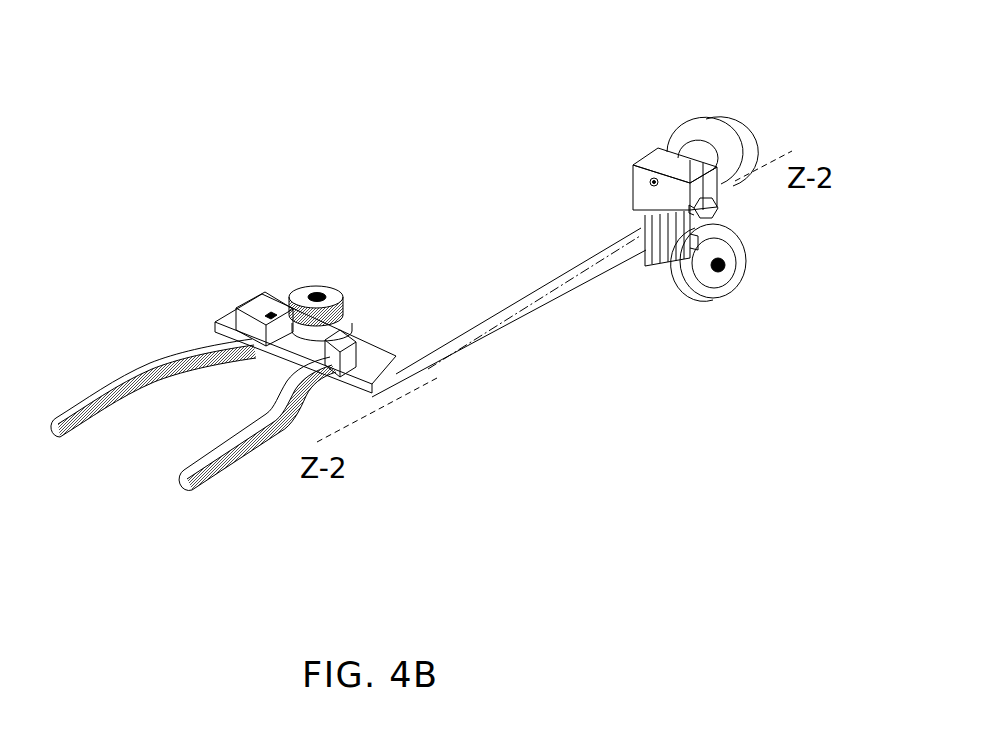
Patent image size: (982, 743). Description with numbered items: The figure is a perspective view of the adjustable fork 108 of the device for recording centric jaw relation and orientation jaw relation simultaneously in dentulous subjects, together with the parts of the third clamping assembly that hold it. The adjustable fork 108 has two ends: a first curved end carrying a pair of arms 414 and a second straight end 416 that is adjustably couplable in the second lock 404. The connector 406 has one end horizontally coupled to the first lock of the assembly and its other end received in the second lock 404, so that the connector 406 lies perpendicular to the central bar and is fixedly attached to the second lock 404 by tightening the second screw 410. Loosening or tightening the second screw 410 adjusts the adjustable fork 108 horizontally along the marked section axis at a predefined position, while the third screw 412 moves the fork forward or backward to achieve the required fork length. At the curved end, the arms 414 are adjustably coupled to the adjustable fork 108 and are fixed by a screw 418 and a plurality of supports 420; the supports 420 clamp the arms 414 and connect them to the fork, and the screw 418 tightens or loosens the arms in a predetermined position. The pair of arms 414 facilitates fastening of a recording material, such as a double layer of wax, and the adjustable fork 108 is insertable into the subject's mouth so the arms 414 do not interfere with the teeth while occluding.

The adjustable fork 108 is at (562, 396).
The second lock 404 is at (642, 192).
The connector 406 is at (720, 213).
The second screw 410 is at (712, 125).
The third screw 412 is at (707, 297).
The pair of arms 414 is at (180, 478).
The second straight end 416 is at (636, 213).
The screw 418 is at (313, 290).
The supports 420 is at (234, 318).